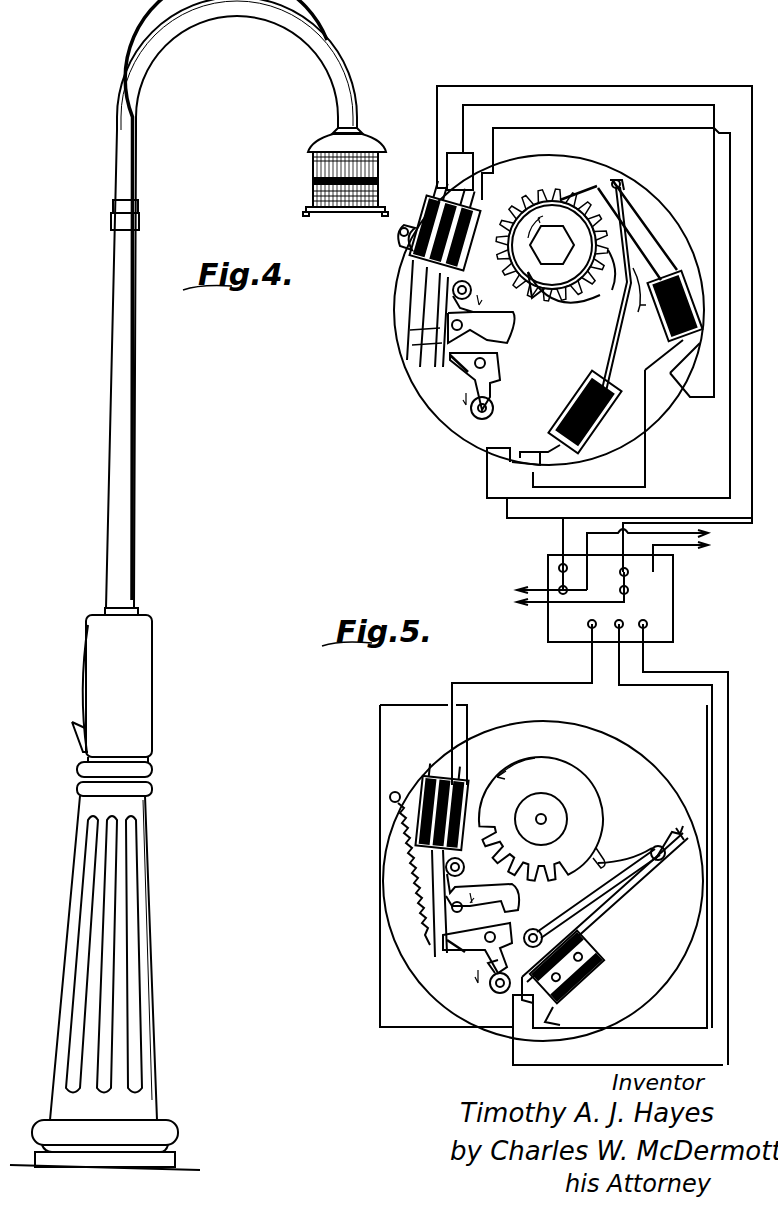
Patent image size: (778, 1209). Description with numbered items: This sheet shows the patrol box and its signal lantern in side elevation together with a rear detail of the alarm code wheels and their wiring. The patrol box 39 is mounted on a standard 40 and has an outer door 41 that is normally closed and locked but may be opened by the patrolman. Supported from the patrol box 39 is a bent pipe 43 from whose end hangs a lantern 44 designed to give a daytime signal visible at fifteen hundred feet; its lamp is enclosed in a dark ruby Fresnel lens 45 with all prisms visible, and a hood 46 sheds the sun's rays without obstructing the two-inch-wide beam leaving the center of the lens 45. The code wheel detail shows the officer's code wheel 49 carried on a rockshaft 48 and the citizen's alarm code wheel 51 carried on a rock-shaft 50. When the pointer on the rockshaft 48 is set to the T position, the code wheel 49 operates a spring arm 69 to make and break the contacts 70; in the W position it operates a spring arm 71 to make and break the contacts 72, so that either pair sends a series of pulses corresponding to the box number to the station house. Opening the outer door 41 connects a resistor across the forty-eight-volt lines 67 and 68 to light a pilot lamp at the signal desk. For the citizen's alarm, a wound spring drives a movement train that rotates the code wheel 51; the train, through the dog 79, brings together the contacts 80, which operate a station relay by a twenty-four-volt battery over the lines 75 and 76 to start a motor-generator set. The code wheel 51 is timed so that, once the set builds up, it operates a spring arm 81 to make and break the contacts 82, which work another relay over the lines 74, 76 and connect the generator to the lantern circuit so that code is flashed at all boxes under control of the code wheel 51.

In FIG. 4, the patrol box 39 is at (139, 662).
In FIG. 4, the standard 40 is at (125, 898).
In FIG. 4, the outer door 41 is at (80, 686).
In FIG. 4, the bent pipe 43 is at (134, 176).
In FIG. 4, the lantern 44 is at (314, 184).
In FIG. 4, the Fresnel lens 45 is at (314, 170).
In FIG. 4, the hood 46 is at (364, 134).
In FIG. 5, the rockshaft 48 is at (562, 299).
In FIG. 5, the officer's code wheel 49 is at (562, 196).
In FIG. 5, the rock-shaft 50 is at (543, 814).
In FIG. 5, the citizen's alarm code wheel 51 is at (590, 796).
In FIG. 5, the line 67 is at (715, 533).
In FIG. 5, the line 68 is at (712, 552).
In FIG. 5, the spring arm 69 is at (617, 280).
In FIG. 5, the contacts 70 is at (628, 295).
In FIG. 5, the spring arm 71 is at (603, 182).
In FIG. 5, the contacts 72 is at (622, 184).
In FIG. 5, the line 74 is at (588, 658).
In FIG. 5, the line 75 is at (700, 672).
In FIG. 5, the line 76 is at (620, 676).
In FIG. 5, the dog 79 is at (496, 990).
In FIG. 5, the contacts 80 is at (438, 958).
In FIG. 5, the spring arm 81 is at (650, 888).
In FIG. 5, the contacts 82 is at (668, 800).